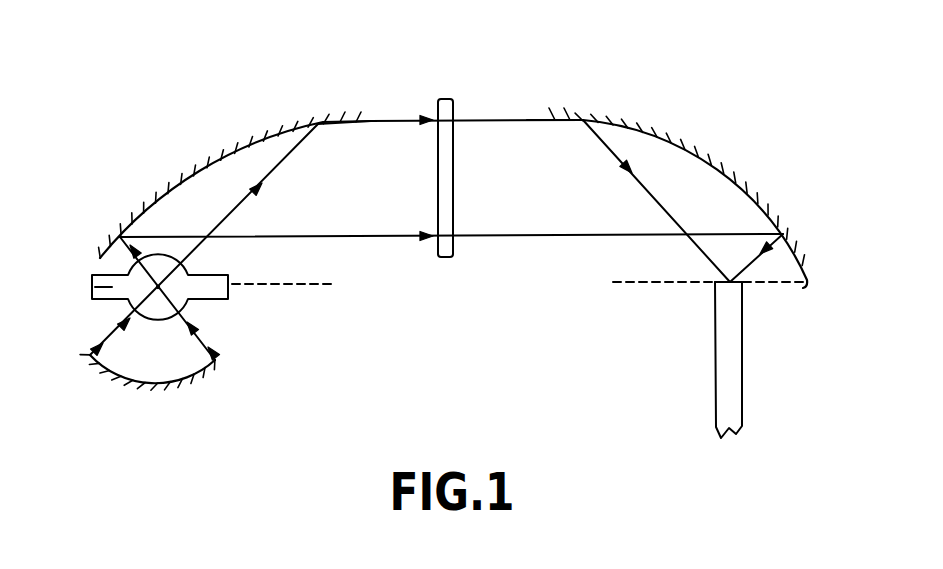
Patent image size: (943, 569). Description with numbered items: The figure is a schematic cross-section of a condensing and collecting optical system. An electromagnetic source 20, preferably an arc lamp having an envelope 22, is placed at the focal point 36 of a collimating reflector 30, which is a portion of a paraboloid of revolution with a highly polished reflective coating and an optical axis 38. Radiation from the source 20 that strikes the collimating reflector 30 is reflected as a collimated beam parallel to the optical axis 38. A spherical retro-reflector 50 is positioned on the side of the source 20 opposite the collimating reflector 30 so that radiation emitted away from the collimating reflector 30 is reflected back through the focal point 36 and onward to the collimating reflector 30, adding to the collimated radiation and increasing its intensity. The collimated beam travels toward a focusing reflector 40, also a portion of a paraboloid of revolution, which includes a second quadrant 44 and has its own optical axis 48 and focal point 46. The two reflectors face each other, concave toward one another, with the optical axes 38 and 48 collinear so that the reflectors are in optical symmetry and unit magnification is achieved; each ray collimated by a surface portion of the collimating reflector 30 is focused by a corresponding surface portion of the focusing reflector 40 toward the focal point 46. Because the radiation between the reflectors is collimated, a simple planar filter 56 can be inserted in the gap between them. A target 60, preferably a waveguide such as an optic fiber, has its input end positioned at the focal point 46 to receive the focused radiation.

The electromagnetic source 20 is at (198, 305).
The envelope 22 is at (130, 303).
The collimating reflector 30 is at (221, 162).
The focal point 36 is at (158, 288).
The optical axis 38 is at (311, 287).
The focusing reflector 40 is at (655, 138).
The second quadrant 44 is at (677, 146).
The focal point 46 is at (743, 283).
The optical axis 48 is at (636, 285).
The retro-reflector 50 is at (165, 382).
The filter 56 is at (447, 99).
The target 60 is at (745, 367).